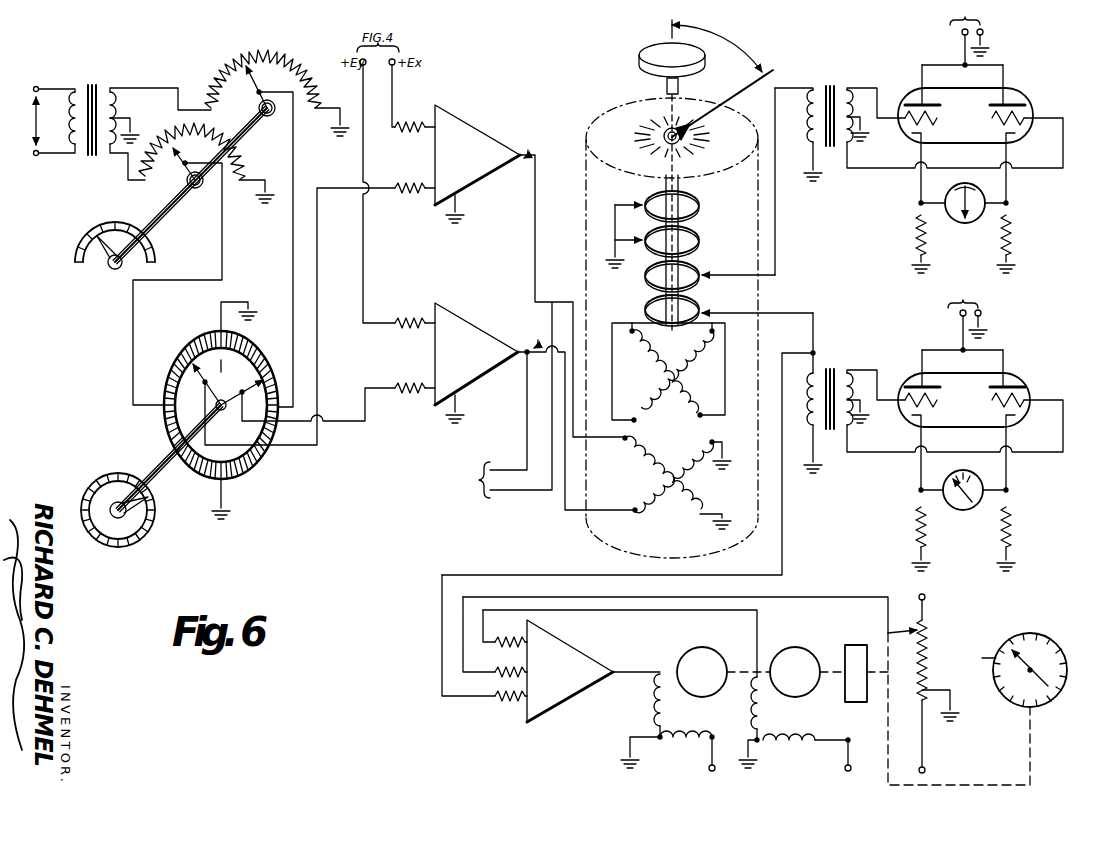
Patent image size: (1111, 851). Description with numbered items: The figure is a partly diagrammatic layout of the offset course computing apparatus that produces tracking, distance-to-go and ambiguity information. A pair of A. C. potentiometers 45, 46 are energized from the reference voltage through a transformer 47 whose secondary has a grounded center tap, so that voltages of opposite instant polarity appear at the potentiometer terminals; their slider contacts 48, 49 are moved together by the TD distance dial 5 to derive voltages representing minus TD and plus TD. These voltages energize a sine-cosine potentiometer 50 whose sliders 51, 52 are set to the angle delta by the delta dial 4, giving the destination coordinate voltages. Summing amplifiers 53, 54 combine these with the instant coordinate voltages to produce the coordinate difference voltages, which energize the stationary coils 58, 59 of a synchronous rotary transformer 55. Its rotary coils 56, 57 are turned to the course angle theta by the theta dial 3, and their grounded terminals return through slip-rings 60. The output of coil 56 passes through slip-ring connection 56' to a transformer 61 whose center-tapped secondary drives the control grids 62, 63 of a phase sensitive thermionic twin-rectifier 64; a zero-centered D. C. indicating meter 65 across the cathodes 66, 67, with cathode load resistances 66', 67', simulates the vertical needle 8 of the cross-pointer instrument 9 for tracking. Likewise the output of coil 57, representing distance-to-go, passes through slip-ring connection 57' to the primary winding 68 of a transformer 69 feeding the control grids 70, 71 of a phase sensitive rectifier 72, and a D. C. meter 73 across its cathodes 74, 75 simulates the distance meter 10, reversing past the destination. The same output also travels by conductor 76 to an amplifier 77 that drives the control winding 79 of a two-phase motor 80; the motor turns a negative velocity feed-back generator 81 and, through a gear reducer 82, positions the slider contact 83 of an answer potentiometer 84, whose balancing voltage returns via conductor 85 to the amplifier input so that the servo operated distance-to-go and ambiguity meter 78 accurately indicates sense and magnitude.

The θ dial 3 is at (648, 52).
The δ dial 4 is at (116, 519).
The TD distance dial 5 is at (108, 266).
The vertical needle 8 is at (968, 196).
The cross-pointer instrument 9 is at (940, 200).
The distance meter 10 is at (997, 481).
The A. C. potentiometer 45 is at (256, 58).
The A. C. potentiometer 46 is at (250, 162).
The transformer 47 is at (92, 88).
The slider contact 48 is at (253, 68).
The slider contact 49 is at (176, 156).
The sine-cosine potentiometer 50 is at (209, 335).
The slider 51 is at (198, 378).
The slider 52 is at (264, 386).
The summing amplifier 53 is at (471, 127).
The summing amplifier 54 is at (454, 316).
The synchronous rotary transformer 55 is at (606, 104).
The rotary coil 56 is at (674, 375).
The slip-ring connection 56' is at (746, 190).
The rotary coil 57 is at (668, 371).
The slip-ring connection 57' is at (729, 308).
The stationary coil 58 is at (634, 492).
The stationary coil 59 is at (703, 504).
The slip-rings 60 is at (693, 232).
The transformer 61 is at (852, 80).
The control grid 62 is at (888, 100).
The control grid 63 is at (1031, 111).
The phase sensitive thermionic twin-rectifier 64 is at (1019, 92).
The D. C. indicating meter 65 is at (950, 228).
The cathode 66 is at (907, 168).
The cathode load resistance 66' is at (908, 244).
The cathode 67 is at (1020, 168).
The cathode load resistance 67' is at (1019, 244).
The primary winding 68 is at (808, 391).
The transformer 69 is at (829, 431).
The control grid 70 is at (904, 391).
The control grid 71 is at (1024, 391).
The thermionic phase sensitive rectifier 72 is at (992, 370).
The D. C. meter 73 is at (958, 518).
The cathode 74 is at (916, 426).
The cathode 75 is at (1012, 432).
The conductor 76 is at (787, 521).
The amplifier 77 is at (560, 641).
The servo operated distance-to-go and ambiguity meter 78 is at (1016, 708).
The control winding 79 is at (652, 711).
The two-phase motor 80 is at (704, 649).
The negative velocity feed-back generator 81 is at (812, 652).
The gear reducer 82 is at (866, 643).
The slider contact 83 is at (917, 628).
The answer potentiometer 84 is at (926, 664).
The conductor 85 is at (847, 592).